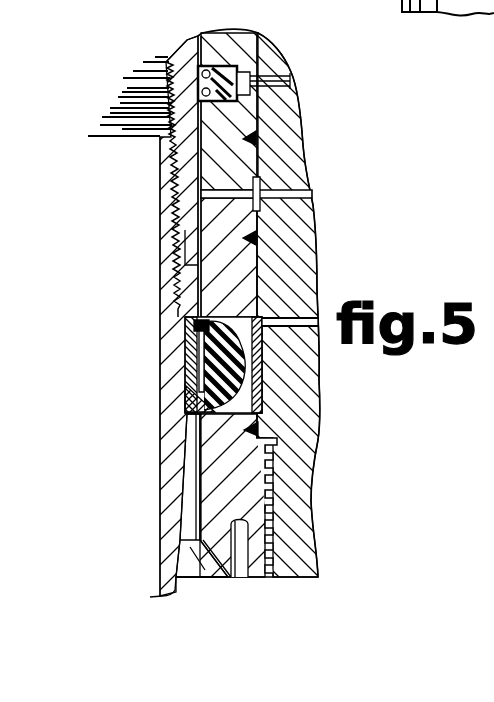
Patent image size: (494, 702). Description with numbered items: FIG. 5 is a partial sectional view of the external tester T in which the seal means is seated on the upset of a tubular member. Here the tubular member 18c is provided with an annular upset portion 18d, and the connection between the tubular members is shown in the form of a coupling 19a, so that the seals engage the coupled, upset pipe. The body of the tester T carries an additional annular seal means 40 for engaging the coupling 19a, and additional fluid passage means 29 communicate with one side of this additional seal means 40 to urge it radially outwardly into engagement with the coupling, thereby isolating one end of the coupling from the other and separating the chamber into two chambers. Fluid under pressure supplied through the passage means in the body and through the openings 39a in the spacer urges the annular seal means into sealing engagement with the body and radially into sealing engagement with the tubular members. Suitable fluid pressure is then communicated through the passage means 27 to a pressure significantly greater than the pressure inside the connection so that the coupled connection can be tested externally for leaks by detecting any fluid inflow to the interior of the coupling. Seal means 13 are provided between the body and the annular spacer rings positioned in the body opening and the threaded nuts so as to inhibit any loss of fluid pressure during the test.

The seal means 13 is at (255, 138).
The tubular member 18c is at (160, 503).
The annular upset portion 18d is at (160, 355).
The coupling 19a is at (174, 193).
The passage means 27 is at (292, 185).
The additional fluid passage means 29 is at (290, 93).
The openings in spacer 39a is at (265, 318).
The additional annular seal means 40 is at (232, 70).
The external tester T is at (303, 277).